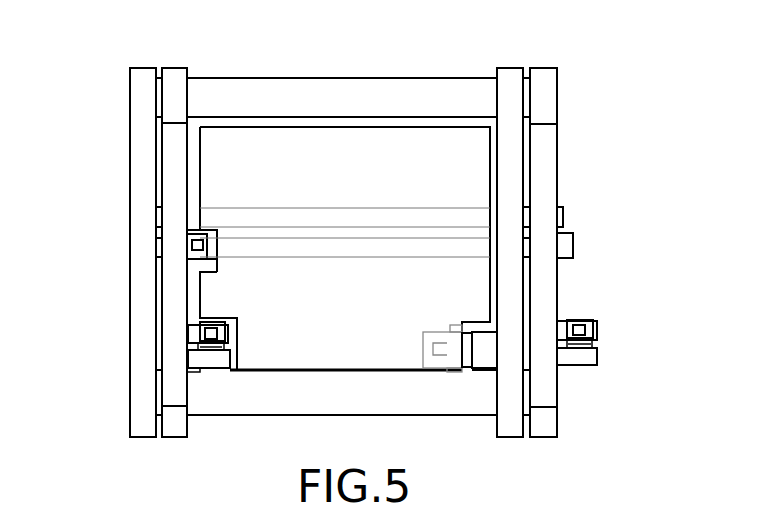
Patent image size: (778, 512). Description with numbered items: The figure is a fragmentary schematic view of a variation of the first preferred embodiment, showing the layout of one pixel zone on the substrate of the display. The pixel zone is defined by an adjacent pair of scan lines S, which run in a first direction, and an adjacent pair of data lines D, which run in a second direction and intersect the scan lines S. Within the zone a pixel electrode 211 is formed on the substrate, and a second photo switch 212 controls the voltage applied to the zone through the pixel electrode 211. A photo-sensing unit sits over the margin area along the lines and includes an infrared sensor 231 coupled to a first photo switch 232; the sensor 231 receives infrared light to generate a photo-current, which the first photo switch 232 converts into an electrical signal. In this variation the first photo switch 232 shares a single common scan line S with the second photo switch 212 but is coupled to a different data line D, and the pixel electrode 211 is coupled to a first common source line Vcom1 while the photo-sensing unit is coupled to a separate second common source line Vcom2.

The scan line S is at (217, 93).
The data line D is at (172, 92).
The pixel electrode 211 is at (334, 170).
The second photo switch 212 is at (442, 378).
The infrared sensor 231 is at (173, 333).
The first photo switch 232 is at (212, 378).
The first common source line Vcom1 is at (197, 218).
The second common source line Vcom2 is at (212, 245).